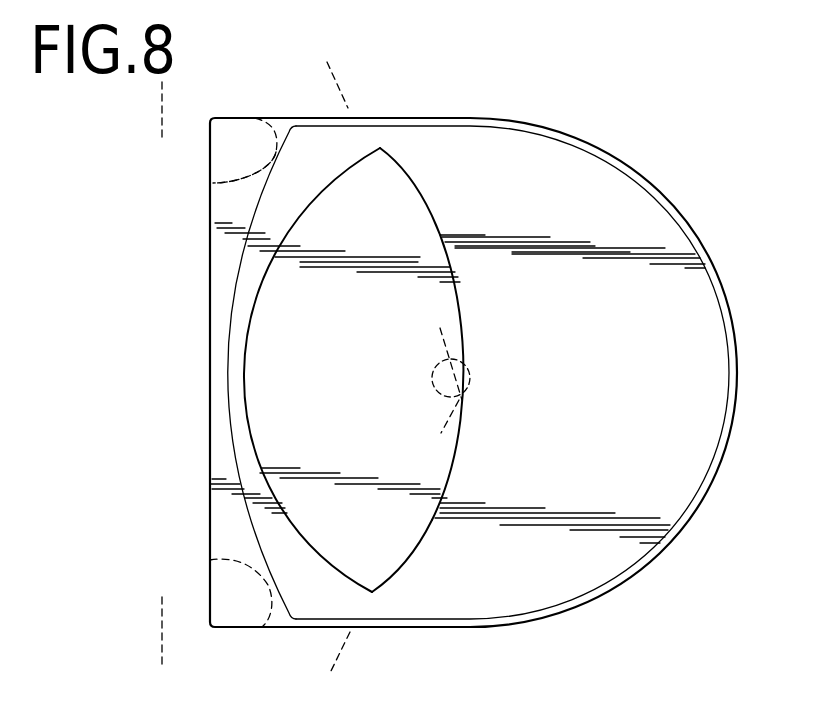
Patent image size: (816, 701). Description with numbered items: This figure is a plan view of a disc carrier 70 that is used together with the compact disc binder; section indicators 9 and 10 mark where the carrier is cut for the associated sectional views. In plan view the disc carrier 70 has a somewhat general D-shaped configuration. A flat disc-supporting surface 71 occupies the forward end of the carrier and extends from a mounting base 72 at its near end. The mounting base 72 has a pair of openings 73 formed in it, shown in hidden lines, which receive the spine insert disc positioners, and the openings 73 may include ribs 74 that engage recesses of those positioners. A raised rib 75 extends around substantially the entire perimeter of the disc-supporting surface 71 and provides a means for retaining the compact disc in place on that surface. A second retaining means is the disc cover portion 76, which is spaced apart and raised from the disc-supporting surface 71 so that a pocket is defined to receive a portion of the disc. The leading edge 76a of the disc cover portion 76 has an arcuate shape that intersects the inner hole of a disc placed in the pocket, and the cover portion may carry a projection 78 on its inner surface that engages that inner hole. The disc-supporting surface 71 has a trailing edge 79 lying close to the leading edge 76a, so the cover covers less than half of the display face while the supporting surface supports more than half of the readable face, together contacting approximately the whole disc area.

The section line 9- 9 is at (205, 97).
The section line 10- 10 is at (304, 77).
The disc carrier 70 is at (500, 108).
The disc-supporting surface 71 is at (627, 299).
The mounting base 72 is at (202, 251).
The openings 73 is at (253, 132).
The ribs 74 is at (213, 183).
The raised rib 75 is at (721, 288).
The disc cover portion 76 is at (332, 312).
The leading edge 76a is at (467, 318).
The projection 78 is at (447, 390).
The trailing edge 79 is at (412, 548).